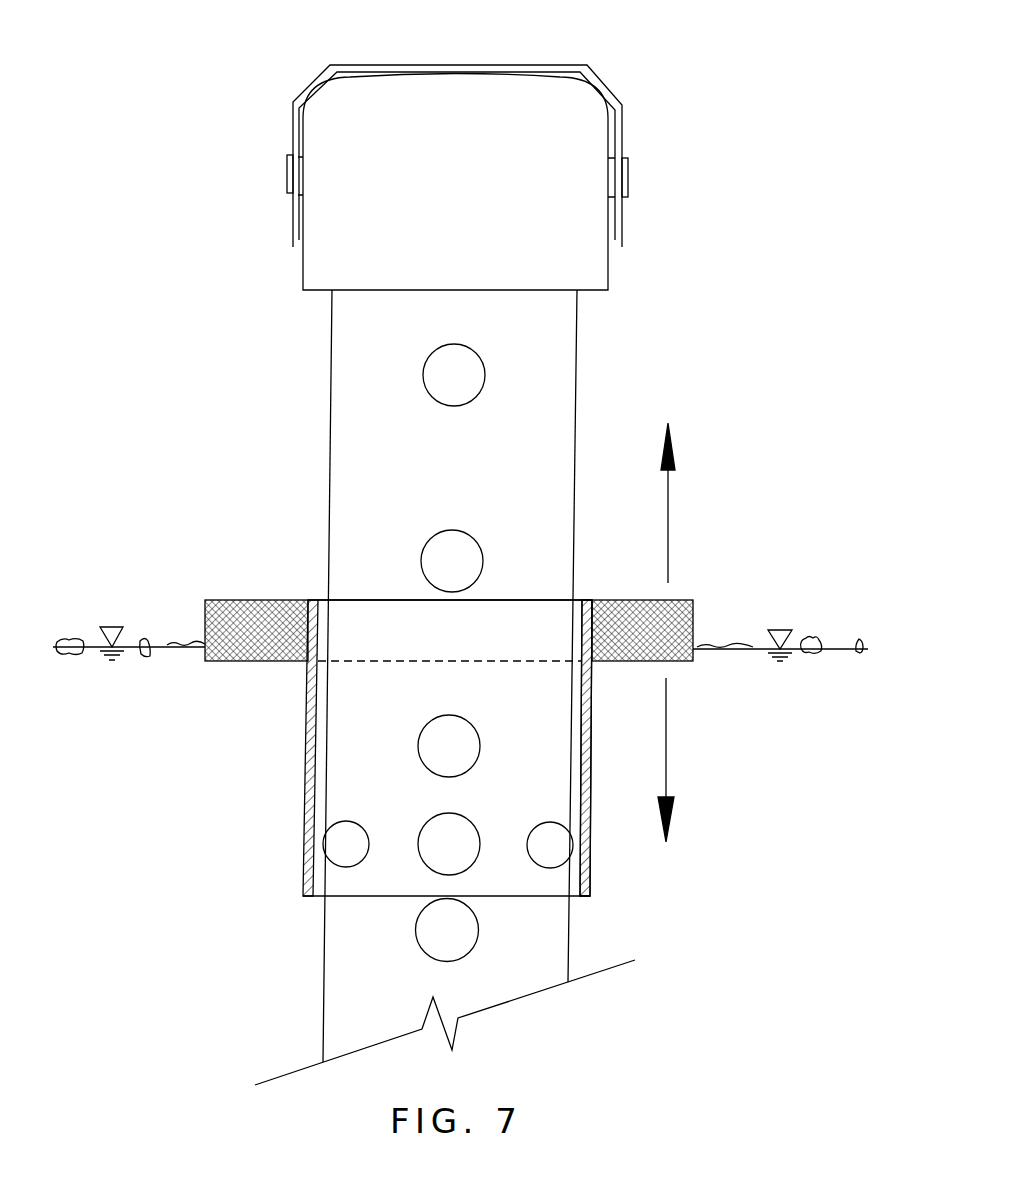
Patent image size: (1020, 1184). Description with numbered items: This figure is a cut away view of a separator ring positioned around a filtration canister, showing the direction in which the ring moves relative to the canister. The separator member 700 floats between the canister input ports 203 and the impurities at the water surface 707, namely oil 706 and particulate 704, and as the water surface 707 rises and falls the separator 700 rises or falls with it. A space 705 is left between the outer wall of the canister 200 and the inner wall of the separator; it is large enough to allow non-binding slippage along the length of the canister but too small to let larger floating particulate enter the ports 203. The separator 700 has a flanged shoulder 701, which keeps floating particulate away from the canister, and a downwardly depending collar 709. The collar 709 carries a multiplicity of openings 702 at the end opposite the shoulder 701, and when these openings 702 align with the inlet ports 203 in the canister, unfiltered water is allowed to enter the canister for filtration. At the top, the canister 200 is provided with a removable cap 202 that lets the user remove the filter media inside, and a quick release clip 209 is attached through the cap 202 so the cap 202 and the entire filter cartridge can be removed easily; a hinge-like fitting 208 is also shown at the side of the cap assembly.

The canister 200 is at (372, 687).
The removable cap 202 is at (382, 153).
The canister input port 203 is at (467, 653).
The hinge 208 is at (535, 190).
The quick release clip 209 is at (506, 134).
The separator member 700 is at (361, 748).
The flanged shoulder 701 is at (504, 597).
The openings 702 is at (351, 838).
The particulate 704 is at (455, 631).
The space 705 is at (505, 487).
The oil 706 is at (466, 654).
The water surface 707 is at (477, 602).
The downwardly depending collar 709 is at (647, 748).